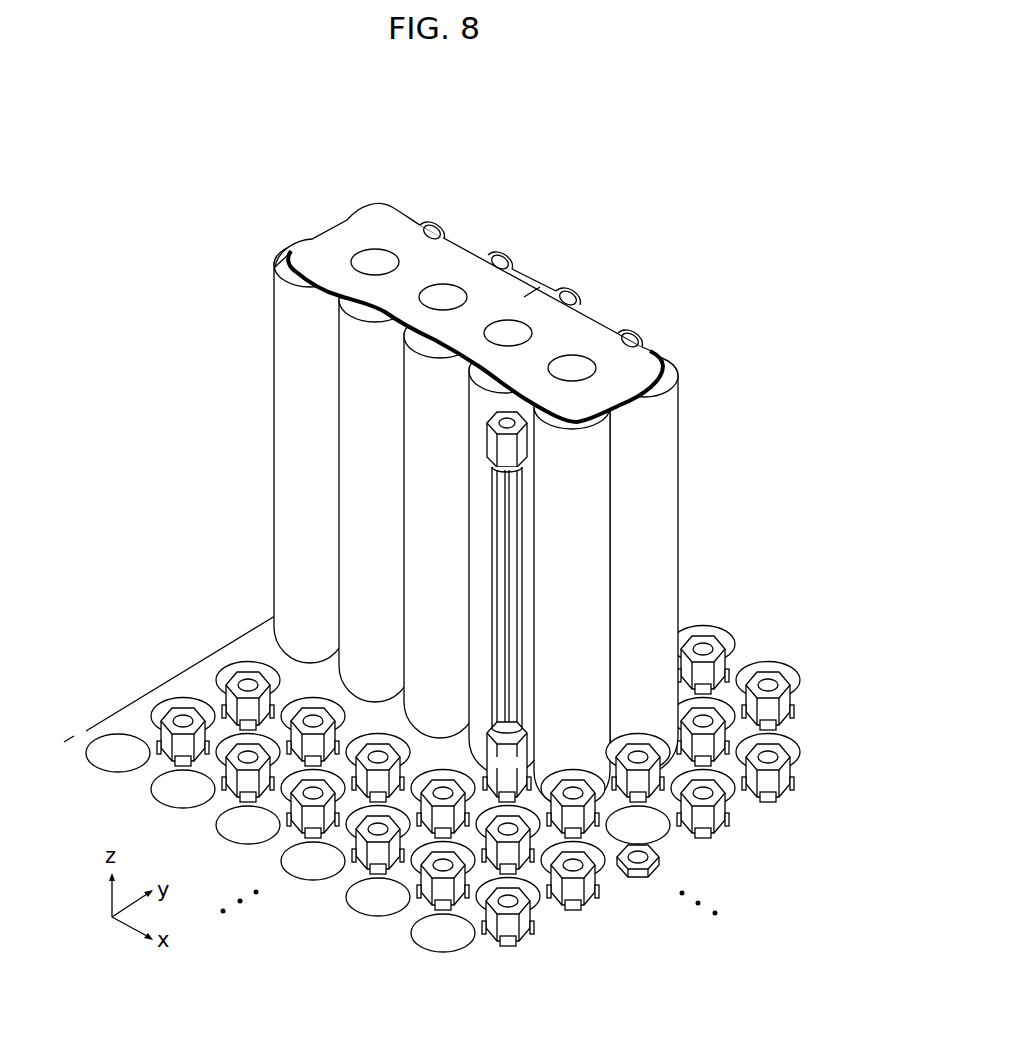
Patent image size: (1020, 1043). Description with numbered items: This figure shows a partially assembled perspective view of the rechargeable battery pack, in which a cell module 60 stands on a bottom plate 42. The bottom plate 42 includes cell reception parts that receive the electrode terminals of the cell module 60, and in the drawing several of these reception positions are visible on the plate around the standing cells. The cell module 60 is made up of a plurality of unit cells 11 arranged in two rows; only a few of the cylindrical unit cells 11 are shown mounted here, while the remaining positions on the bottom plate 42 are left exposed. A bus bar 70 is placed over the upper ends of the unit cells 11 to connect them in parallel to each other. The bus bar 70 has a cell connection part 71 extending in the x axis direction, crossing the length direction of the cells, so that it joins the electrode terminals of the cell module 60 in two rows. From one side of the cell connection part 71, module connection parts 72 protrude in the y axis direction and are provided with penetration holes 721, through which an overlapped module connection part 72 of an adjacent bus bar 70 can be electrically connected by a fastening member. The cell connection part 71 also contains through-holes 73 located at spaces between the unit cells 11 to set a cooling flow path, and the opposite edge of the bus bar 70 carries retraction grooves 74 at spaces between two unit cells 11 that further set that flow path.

The unit cell 11 is at (677, 512).
The bottom plate 42 is at (205, 658).
The cell module 60 is at (441, 294).
The bus bar 70 is at (522, 278).
The cell connection part 71 is at (533, 294).
The module connection part 72 is at (508, 270).
The penetration hole 721 is at (498, 255).
The through-hole 73 is at (401, 257).
The retraction groove 74 is at (375, 303).